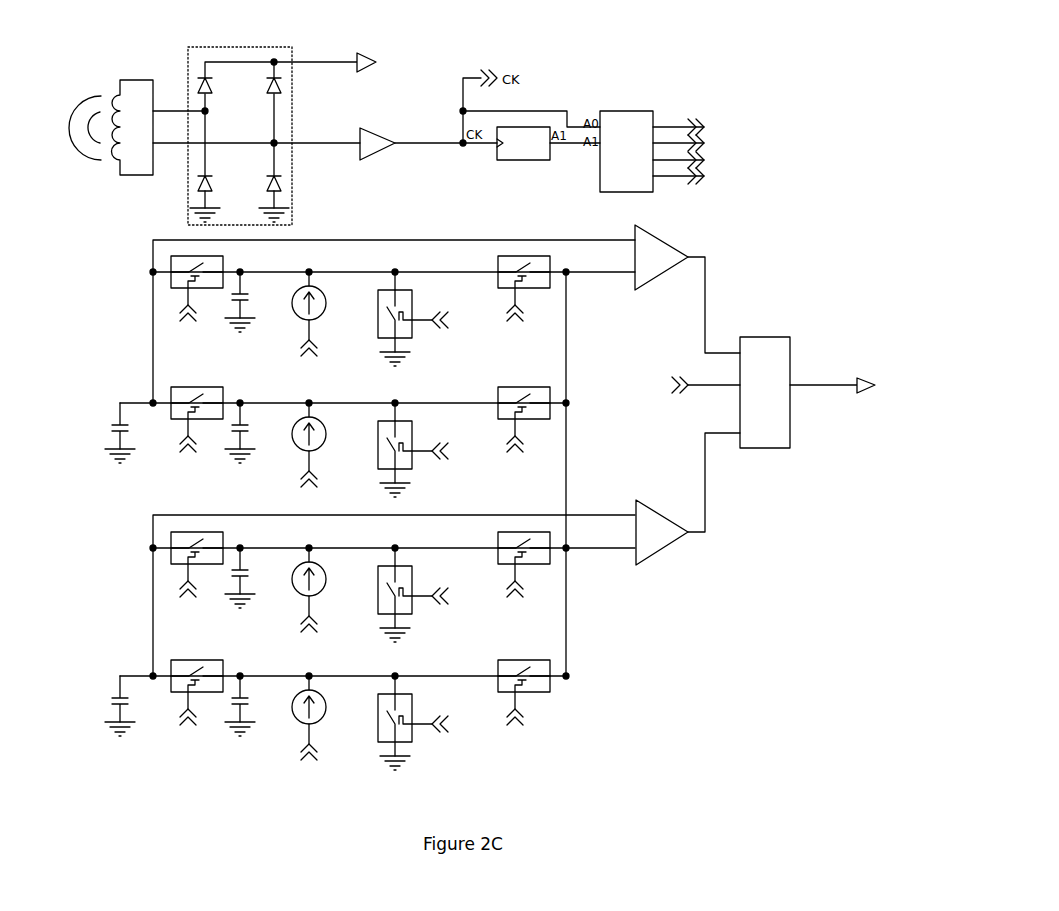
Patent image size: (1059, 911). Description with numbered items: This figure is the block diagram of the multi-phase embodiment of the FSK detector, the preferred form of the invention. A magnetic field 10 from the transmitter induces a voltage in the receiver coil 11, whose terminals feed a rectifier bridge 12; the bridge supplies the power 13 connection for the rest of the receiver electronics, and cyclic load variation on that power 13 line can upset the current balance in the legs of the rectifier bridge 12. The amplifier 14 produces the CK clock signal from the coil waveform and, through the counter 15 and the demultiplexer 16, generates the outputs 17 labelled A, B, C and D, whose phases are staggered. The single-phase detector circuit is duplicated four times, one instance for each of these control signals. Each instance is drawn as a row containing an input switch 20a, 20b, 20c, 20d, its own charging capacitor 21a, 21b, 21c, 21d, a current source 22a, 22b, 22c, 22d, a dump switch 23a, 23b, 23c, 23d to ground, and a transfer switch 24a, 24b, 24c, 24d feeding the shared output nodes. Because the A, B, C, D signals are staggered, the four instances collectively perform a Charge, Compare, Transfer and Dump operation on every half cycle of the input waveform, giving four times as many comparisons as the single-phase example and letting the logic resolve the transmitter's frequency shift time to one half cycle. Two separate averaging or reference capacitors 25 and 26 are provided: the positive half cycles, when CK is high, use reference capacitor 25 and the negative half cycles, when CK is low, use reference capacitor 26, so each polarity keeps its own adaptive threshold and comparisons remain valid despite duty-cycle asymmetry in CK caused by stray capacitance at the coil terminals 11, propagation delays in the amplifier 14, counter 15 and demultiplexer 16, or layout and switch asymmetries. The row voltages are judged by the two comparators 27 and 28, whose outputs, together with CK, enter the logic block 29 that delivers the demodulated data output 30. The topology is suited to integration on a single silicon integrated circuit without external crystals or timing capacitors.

The magnetic field 10 is at (82, 150).
The receiver coil 11 is at (115, 84).
The rectifier bridge 12 is at (192, 50).
The power 13 is at (355, 54).
The amplifier 14 is at (357, 130).
The counter 15 is at (497, 150).
The demultiplexer 16 is at (615, 110).
The outputs A, B, C and D 17 is at (712, 118).
The sampling switch 20a is at (170, 256).
The sampling switch 20b is at (170, 387).
The sampling switch 20c is at (170, 532).
The sampling switch 20d is at (170, 660).
The charging capacitor 21a is at (248, 284).
The charging capacitor 21b is at (248, 415).
The charging capacitor 21c is at (248, 560).
The charging capacitor 21d is at (248, 688).
The current source 22a is at (327, 298).
The current source 22b is at (327, 429).
The current source 22c is at (327, 574).
The current source 22d is at (327, 702).
The discharge switch 23a is at (412, 290).
The discharge switch 23b is at (412, 421).
The discharge switch 23c is at (412, 566).
The discharge switch 23d is at (412, 694).
The output switch 24a is at (498, 290).
The output switch 24b is at (498, 421).
The output switch 24c is at (498, 566).
The output switch 24d is at (498, 694).
The reference capacitor 25 is at (108, 420).
The reference capacitor 26 is at (108, 691).
The comparator 27 is at (632, 292).
The comparator 28 is at (632, 500).
The logic circuit 29 is at (790, 452).
The demodulated data output 30 is at (848, 372).